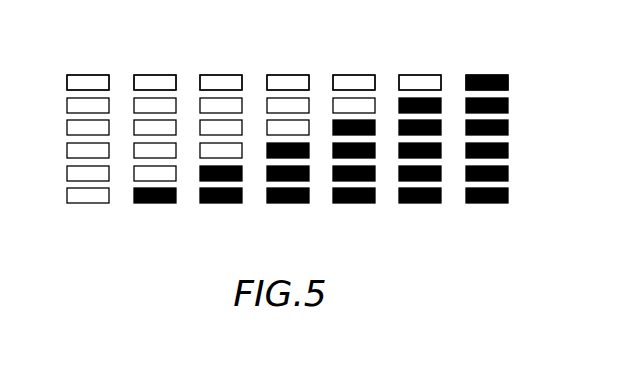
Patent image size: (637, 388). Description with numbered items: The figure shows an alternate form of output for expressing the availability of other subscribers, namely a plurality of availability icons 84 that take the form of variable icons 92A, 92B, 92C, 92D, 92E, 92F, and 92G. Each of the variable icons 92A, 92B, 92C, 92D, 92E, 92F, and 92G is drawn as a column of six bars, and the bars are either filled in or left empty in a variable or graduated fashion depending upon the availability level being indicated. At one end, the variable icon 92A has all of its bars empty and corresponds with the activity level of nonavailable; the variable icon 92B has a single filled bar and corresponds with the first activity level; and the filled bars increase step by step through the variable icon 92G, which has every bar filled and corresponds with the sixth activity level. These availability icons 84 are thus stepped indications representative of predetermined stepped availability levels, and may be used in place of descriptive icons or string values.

The availability icons 84 is at (83, 70).
The variable icon 92A is at (90, 206).
The variable icon 92B is at (157, 206).
The variable icon 92C is at (223, 206).
The variable icon 92D is at (290, 206).
The variable icon 92E is at (356, 206).
The variable icon 92F is at (422, 206).
The variable icon 92G is at (489, 206).